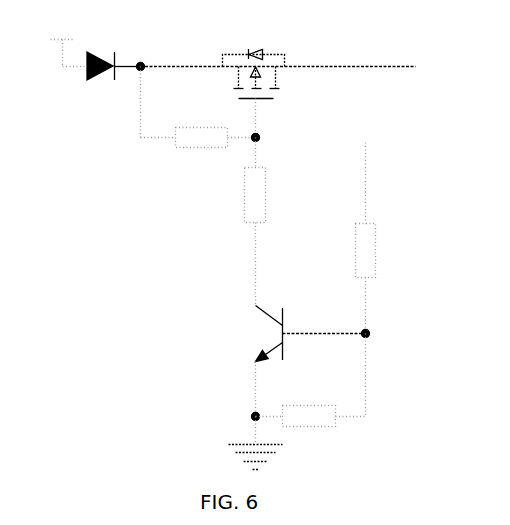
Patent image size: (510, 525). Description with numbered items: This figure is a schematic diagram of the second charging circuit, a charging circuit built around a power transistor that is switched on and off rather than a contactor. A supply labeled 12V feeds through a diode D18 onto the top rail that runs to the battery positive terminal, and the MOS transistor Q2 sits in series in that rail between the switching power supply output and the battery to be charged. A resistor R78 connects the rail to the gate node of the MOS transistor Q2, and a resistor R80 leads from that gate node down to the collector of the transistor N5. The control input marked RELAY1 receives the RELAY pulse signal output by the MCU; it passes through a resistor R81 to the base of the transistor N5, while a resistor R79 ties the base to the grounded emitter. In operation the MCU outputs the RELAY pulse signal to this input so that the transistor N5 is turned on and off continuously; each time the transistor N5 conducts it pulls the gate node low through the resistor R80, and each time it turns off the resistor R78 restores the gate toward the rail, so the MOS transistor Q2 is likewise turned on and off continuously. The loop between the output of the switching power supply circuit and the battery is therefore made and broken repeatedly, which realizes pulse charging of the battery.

The 12V supply input 12V is at (64, 40).
The diode D18 is at (111, 85).
The MOS transistor Q2 is at (254, 79).
The resistor R78 is at (200, 122).
The resistor R80 is at (276, 222).
The relay control input RELAY1 is at (353, 169).
The resistor R81 is at (387, 281).
The transistor N5 is at (311, 361).
The resistor R79 is at (309, 380).